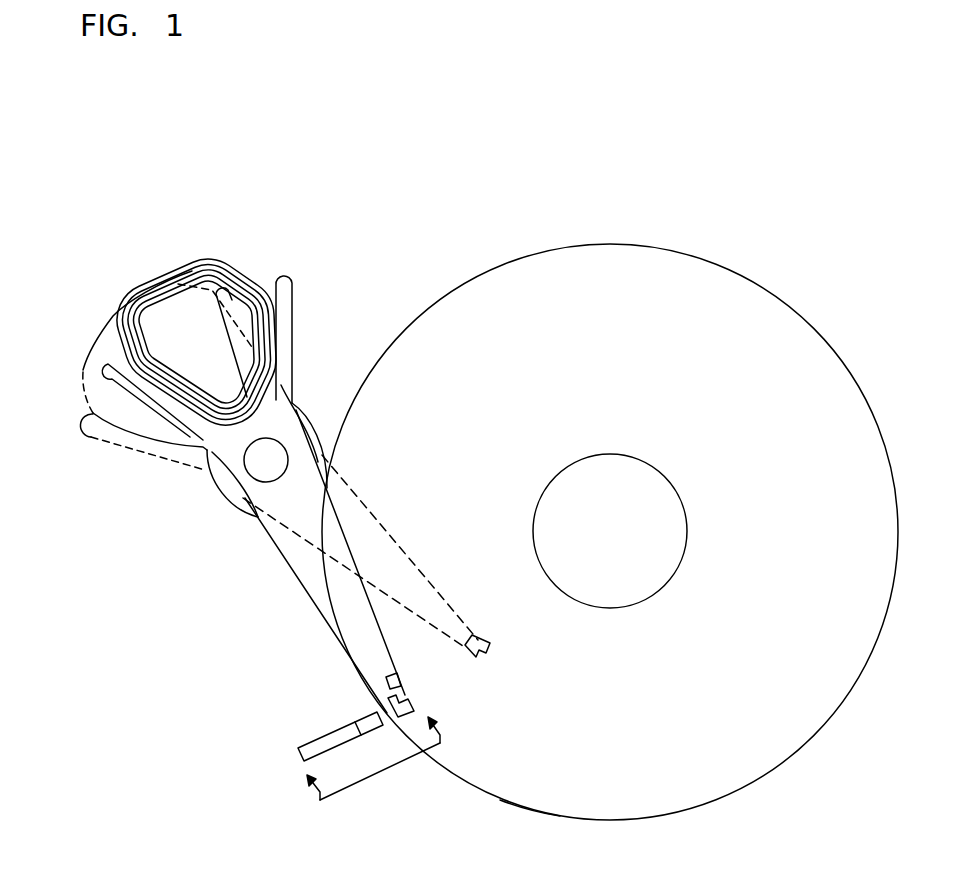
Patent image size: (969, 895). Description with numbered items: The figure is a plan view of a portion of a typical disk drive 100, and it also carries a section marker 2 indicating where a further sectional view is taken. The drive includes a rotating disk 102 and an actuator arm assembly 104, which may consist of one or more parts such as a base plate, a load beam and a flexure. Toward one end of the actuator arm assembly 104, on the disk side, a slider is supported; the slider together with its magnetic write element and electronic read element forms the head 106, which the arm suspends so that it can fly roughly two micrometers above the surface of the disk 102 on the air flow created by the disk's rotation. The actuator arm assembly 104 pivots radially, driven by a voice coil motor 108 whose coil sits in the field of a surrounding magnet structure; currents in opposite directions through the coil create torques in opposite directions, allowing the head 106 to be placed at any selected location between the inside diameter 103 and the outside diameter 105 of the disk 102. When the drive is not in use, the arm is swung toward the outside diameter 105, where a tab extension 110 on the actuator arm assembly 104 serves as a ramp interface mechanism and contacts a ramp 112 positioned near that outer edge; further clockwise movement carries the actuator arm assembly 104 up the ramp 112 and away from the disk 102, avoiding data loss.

The disk drive 100 is at (407, 262).
The disk 102 is at (585, 349).
The inside diameter 103 is at (549, 579).
The actuator arm assembly 104 is at (265, 520).
The outside diameter 105 is at (527, 805).
The head 106 is at (384, 688).
The voice coil motor 108 is at (198, 264).
The tab extension 110 is at (410, 707).
The ramp 112 is at (304, 756).
The section line for FIG. 2 is at (373, 758).